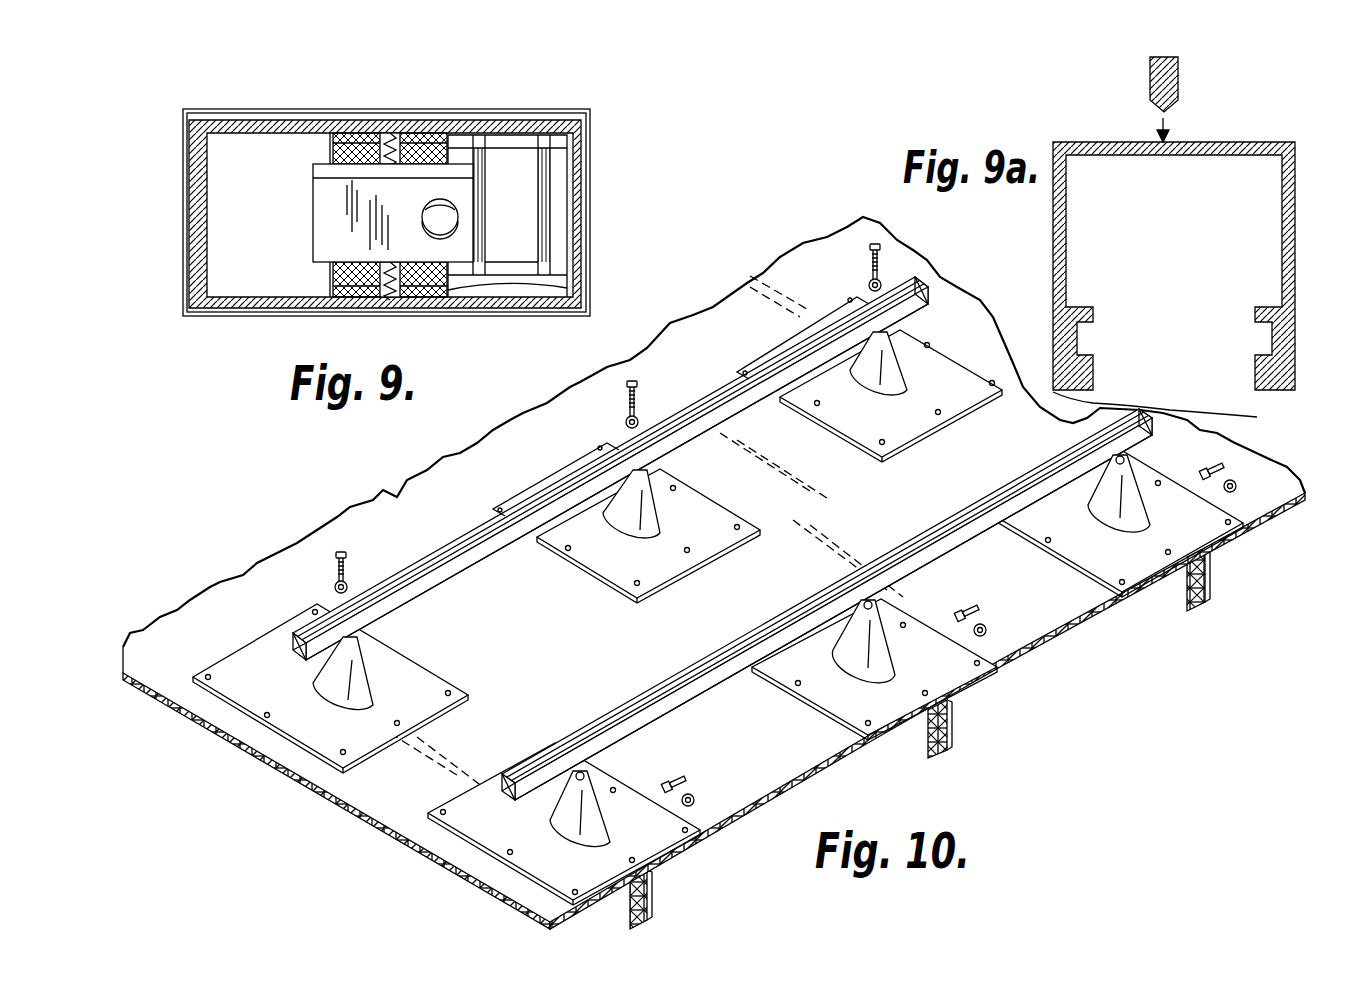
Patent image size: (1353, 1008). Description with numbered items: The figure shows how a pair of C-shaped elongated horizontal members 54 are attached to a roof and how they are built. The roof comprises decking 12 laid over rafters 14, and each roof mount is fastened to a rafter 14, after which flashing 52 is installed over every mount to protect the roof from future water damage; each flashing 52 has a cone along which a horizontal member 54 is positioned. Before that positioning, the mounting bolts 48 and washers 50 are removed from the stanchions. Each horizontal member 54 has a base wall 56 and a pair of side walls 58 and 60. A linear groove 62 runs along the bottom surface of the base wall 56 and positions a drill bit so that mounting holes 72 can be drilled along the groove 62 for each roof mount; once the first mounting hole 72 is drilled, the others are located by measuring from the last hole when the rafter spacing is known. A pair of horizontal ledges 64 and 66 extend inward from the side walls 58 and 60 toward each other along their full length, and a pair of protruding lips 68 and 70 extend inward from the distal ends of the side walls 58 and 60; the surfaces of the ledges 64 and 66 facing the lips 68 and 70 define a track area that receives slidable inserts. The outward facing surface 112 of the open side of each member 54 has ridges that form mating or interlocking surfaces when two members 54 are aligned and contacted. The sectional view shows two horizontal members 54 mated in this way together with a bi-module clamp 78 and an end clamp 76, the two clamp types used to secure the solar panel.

In FIG. 10, the decking 12 is at (447, 870).
In FIG. 10, the rafter 14 is at (647, 893).
In FIG. 10, the mounting bolt 48 is at (347, 557).
In FIG. 10, the washer 50 is at (333, 587).
In FIG. 10, the flashing 52 is at (697, 558).
In FIG. 9A, the C-shaped elongated horizontal member 54 is at (1168, 223).
In FIG. 10, the C-shaped elongated horizontal member 54 is at (722, 538).
In FIG. 9, the base wall 56 is at (392, 213).
In FIG. 9A, the base wall 56 is at (1220, 142).
In FIG. 10, the base wall 56 is at (305, 660).
In FIG. 9, the side wall 58 is at (233, 308).
In FIG. 9A, the side wall 58 is at (1295, 220).
In FIG. 10, the side wall 58 is at (410, 612).
In FIG. 9, the side wall 60 is at (327, 124).
In FIG. 9A, the side wall 60 is at (1053, 243).
In FIG. 9, the linear groove 62 is at (583, 210).
In FIG. 9A, the linear groove 62 is at (1160, 132).
In FIG. 10, the linear groove 62 is at (1143, 440).
In FIG. 9, the horizontal ledge 64 is at (387, 125).
In FIG. 9A, the horizontal ledge 64 is at (1093, 320).
In FIG. 9, the horizontal ledge 66 is at (423, 289).
In FIG. 9A, the horizontal ledge 66 is at (1257, 320).
In FIG. 9A, the protruding lip 68 is at (1106, 347).
In FIG. 9A, the protruding lip 70 is at (1246, 347).
In FIG. 10, the mounting hole 72 is at (1077, 445).
In FIG. 9, the end clamp 76 is at (323, 250).
In FIG. 9, the bi-module clamp 78 is at (583, 148).
In FIG. 9A, the outward facing surface 112 is at (1254, 418).